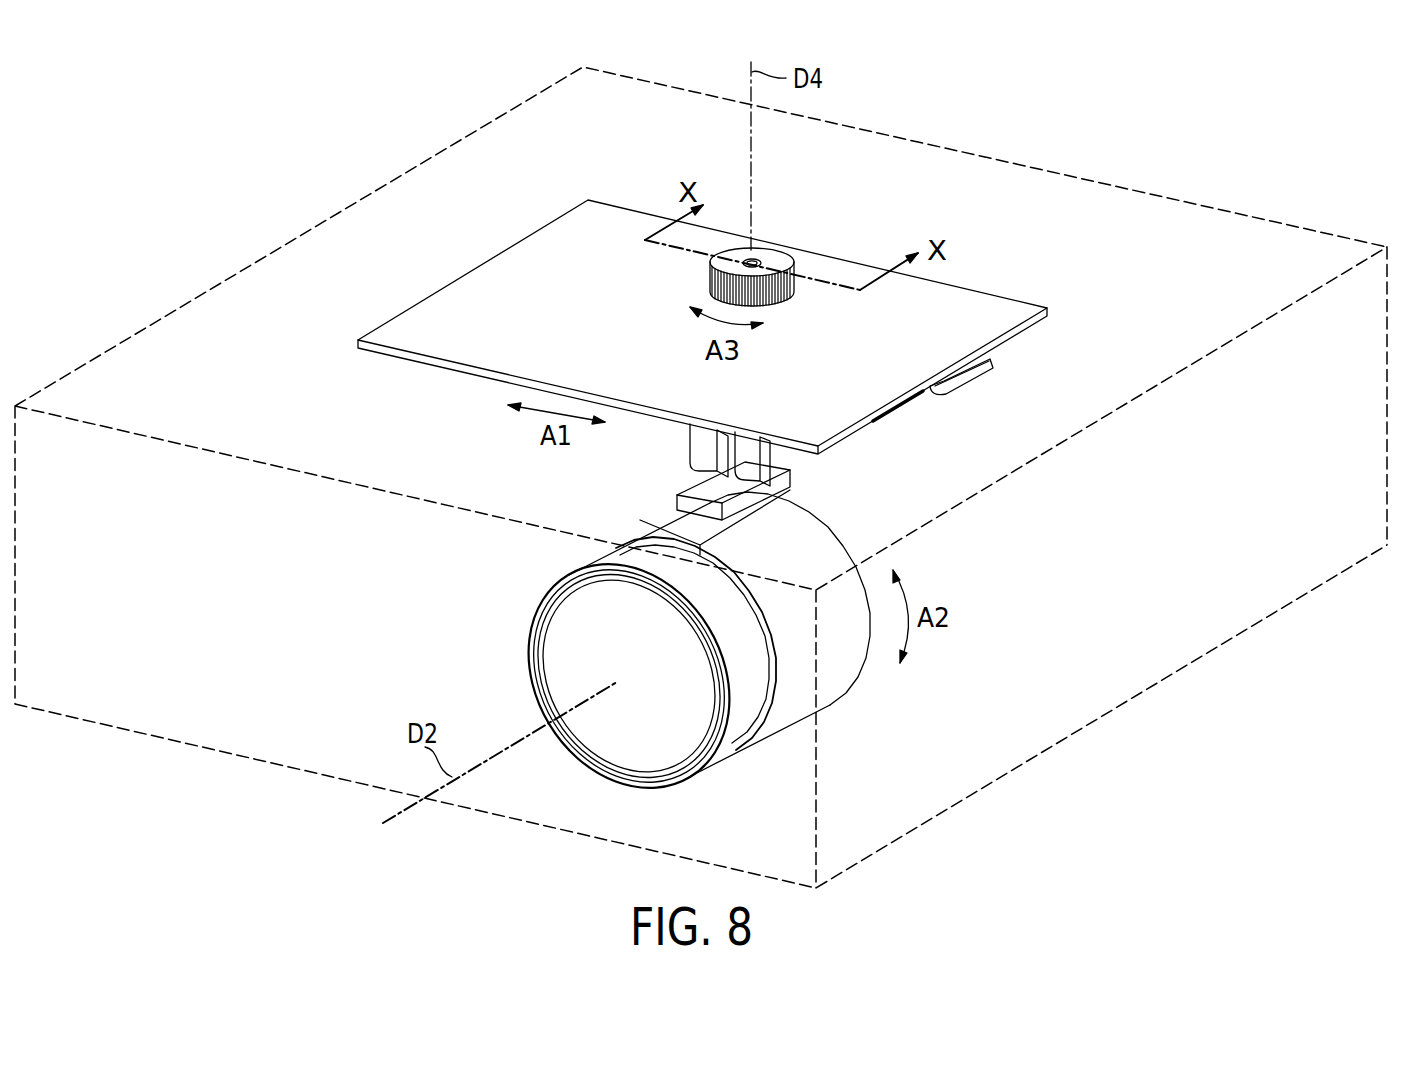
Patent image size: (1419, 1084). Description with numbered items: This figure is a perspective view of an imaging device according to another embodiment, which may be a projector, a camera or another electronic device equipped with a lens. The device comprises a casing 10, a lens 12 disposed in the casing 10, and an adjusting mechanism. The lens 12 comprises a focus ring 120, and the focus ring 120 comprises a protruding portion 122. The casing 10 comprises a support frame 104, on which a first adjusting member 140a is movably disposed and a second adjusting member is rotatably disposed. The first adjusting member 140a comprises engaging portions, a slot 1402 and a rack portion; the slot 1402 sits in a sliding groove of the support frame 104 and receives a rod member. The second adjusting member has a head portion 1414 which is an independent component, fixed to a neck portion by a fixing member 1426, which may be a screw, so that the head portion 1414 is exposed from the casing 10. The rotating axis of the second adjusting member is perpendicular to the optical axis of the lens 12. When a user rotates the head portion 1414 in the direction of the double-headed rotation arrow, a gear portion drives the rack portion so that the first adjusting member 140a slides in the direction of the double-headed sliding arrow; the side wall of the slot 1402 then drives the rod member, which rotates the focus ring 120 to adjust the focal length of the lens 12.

The casing 10 is at (975, 290).
The support frame 104 is at (973, 383).
The lens 12 is at (819, 677).
The focus ring 120 is at (837, 660).
The protruding portion 122 is at (735, 478).
The first adjusting member 140a is at (703, 446).
The slot 1402 is at (747, 467).
The head portion 1414 is at (783, 260).
The fixing member 1426 is at (758, 262).